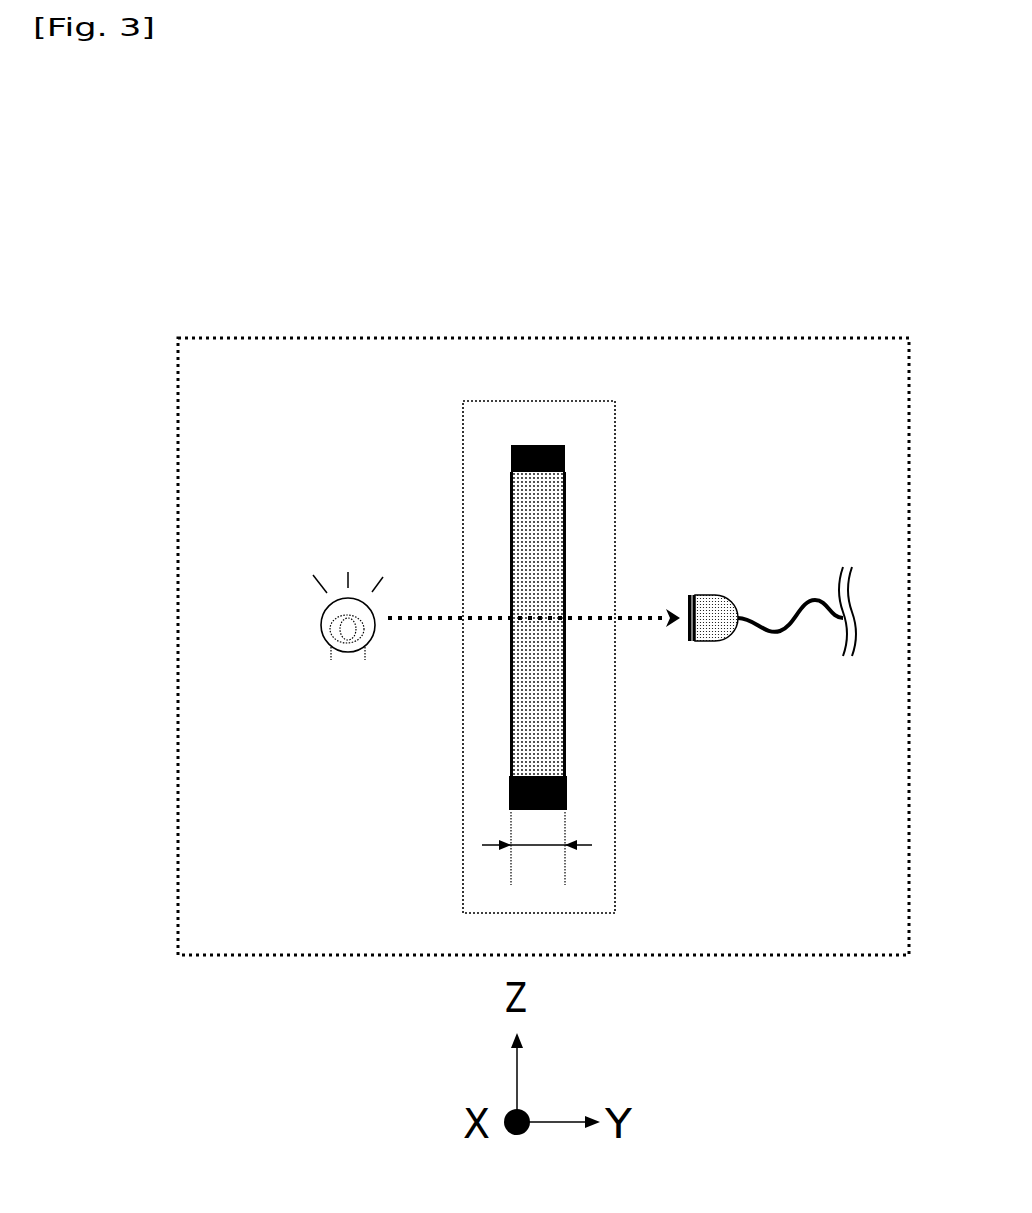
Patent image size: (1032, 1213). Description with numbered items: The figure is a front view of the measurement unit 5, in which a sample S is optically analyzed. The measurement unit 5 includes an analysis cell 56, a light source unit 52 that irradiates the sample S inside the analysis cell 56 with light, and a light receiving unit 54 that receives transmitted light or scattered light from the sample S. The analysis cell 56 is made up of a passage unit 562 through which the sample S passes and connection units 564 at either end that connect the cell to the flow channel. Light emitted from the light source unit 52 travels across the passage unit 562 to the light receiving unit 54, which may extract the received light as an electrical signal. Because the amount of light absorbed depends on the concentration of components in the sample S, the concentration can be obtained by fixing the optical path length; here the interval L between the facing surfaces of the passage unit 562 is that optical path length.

The measurement unit 5 is at (720, 337).
The light source unit 52 is at (322, 635).
The light receiving unit 54 is at (700, 642).
The analysis cell 56 is at (535, 402).
The passage unit 562 is at (510, 525).
The connection unit 564 is at (510, 445).
The sample S is at (553, 512).
The interval between facing surfaces of the passage unit L is at (545, 844).